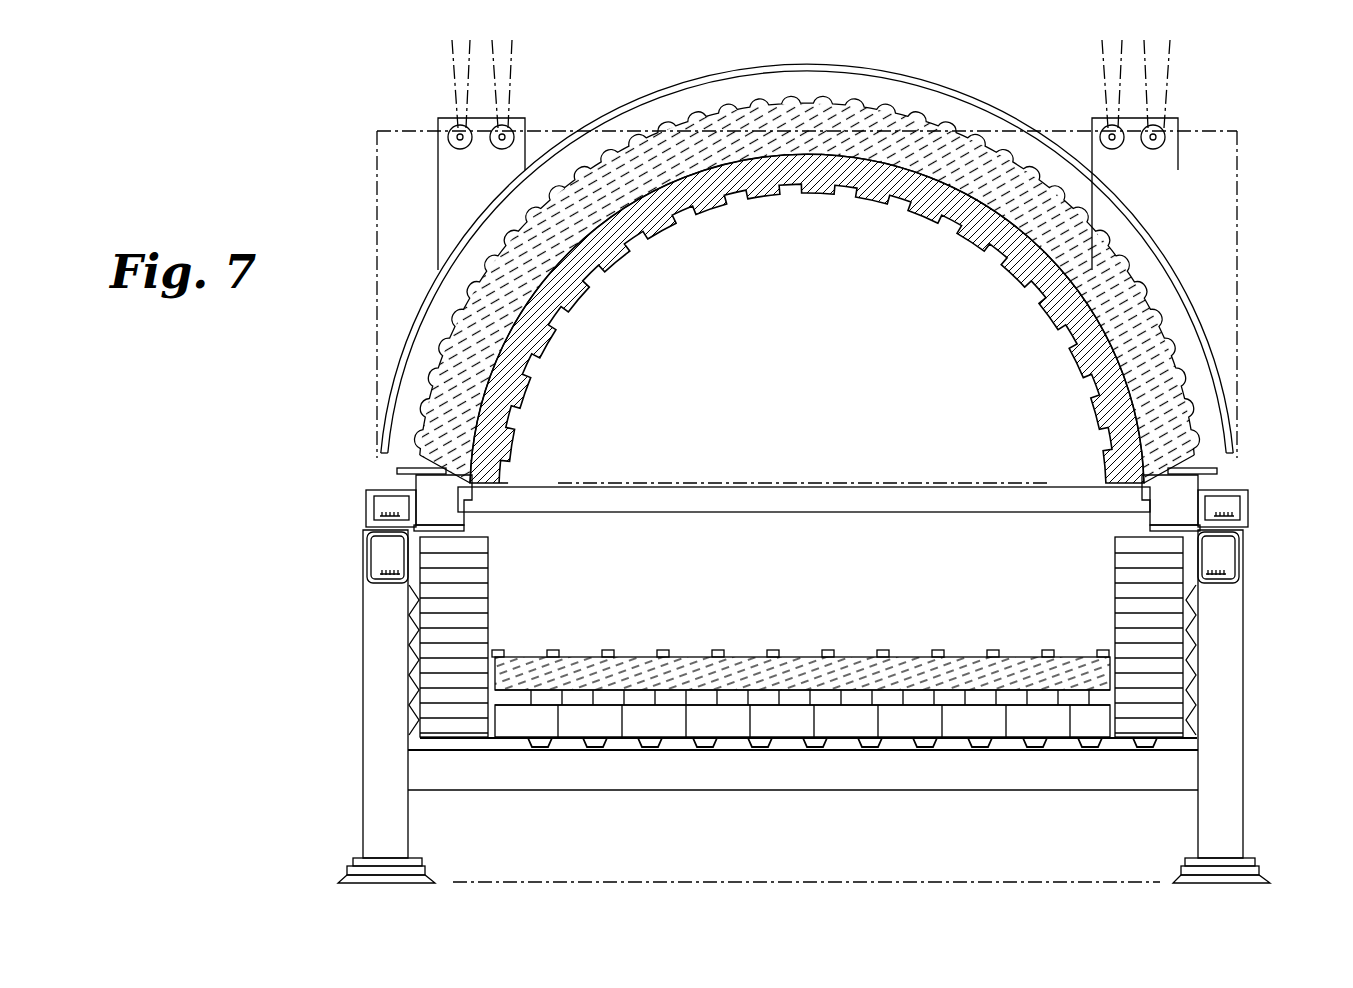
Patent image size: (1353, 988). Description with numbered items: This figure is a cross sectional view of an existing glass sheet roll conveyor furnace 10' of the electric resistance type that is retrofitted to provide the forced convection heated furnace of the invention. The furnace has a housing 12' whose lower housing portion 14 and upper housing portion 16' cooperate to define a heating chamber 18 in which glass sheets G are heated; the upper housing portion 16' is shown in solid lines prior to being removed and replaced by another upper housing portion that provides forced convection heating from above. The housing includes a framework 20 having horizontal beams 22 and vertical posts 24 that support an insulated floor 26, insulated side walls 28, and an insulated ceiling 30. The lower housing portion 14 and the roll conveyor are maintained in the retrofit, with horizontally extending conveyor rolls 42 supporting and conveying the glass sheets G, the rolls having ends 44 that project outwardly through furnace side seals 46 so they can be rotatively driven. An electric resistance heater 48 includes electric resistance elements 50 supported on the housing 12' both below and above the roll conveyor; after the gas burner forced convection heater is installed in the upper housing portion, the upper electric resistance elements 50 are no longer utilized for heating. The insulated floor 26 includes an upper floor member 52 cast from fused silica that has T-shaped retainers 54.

The glass sheet roll conveyor furnace 10' is at (749, 247).
The housing 12' is at (732, 262).
The lower housing portion 14 is at (372, 215).
The upper housing portion 16' is at (749, 258).
The heating chamber 18 is at (695, 240).
The framework 20 is at (1244, 667).
The horizontal beams 22 is at (988, 792).
The vertical posts 24 is at (385, 725).
The insulated floor 26 is at (838, 722).
The insulated side walls 28 is at (432, 605).
The insulated ceiling 30 is at (700, 150).
The conveyor rolls 42 is at (832, 513).
The ends 44 is at (395, 510).
The furnace side seals 46 is at (430, 487).
The electric resistance heater 48 is at (999, 599).
The electric resistance elements 50 is at (1015, 283).
The upper floor member 52 is at (722, 680).
The T-shaped retainers 54 is at (718, 650).
The glass sheets G is at (795, 480).